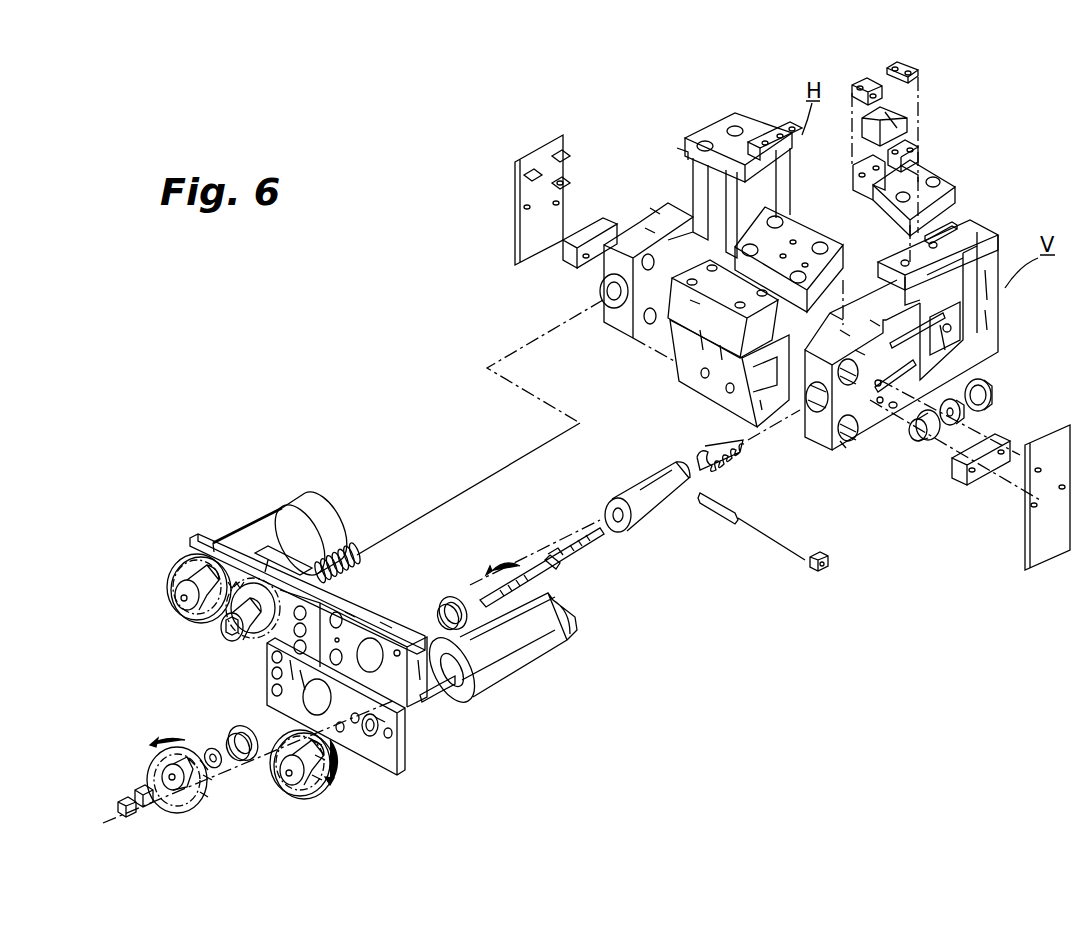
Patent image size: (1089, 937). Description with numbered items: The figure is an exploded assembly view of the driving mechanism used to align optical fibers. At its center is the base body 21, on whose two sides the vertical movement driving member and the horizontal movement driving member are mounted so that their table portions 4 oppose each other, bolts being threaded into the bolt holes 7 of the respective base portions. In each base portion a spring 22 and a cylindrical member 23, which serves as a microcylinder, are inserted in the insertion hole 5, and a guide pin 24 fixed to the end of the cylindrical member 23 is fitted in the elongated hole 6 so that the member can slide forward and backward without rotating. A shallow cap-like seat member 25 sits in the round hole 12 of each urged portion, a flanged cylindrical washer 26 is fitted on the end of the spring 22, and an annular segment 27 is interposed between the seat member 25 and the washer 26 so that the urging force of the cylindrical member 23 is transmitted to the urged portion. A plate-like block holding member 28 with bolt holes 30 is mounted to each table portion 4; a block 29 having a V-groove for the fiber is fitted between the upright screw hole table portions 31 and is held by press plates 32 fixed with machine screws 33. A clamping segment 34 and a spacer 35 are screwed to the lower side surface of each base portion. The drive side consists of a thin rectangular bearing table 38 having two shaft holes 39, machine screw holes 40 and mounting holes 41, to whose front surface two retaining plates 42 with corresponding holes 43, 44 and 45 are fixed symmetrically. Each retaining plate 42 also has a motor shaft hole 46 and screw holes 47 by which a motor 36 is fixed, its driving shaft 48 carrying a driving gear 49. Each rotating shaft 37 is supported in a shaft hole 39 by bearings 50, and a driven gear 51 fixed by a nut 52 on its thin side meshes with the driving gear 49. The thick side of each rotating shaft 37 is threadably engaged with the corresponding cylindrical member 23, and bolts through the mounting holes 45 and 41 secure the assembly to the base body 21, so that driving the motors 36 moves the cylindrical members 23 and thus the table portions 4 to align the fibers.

The table portion 4 is at (680, 160).
The insertion hole 5 is at (815, 440).
The elongated hole 6 is at (888, 404).
The bolt hole 7 is at (842, 437).
The round hole 12 is at (955, 335).
The base body 21 is at (690, 380).
The spring 22 is at (745, 468).
The cylindrical member 23 is at (600, 288).
The guide pin 24 is at (715, 517).
The seat member 25 is at (988, 382).
The washer 26 is at (920, 440).
The annular segment 27 is at (965, 416).
The block holding member 28 is at (718, 128).
The block 29 is at (900, 122).
The bolt hole 30 is at (935, 182).
The screw hole table portion 31 is at (915, 150).
The press plate 32 is at (905, 63).
The machine screw 33 is at (765, 130).
The clamping segment 34 is at (600, 235).
The spacer 35 is at (560, 138).
The motor 36 is at (285, 520).
The rotating shaft 37 is at (355, 552).
The bearing table 38 is at (265, 555).
The shaft hole 39 is at (385, 650).
The machine screw hole 40 is at (372, 625).
The mounting hole 41 is at (338, 615).
The retaining plate 42 is at (200, 540).
The hole 43 is at (300, 705).
The hole 44 is at (295, 640).
The hole 45 is at (290, 615).
The motor shaft hole 46 is at (368, 735).
The screw hole 47 is at (400, 745).
The driving shaft 48 is at (440, 690).
The driving gear 49 is at (172, 572).
The bearing 50 is at (450, 598).
The driven gear 51 is at (185, 800).
The nut 52 is at (225, 625).